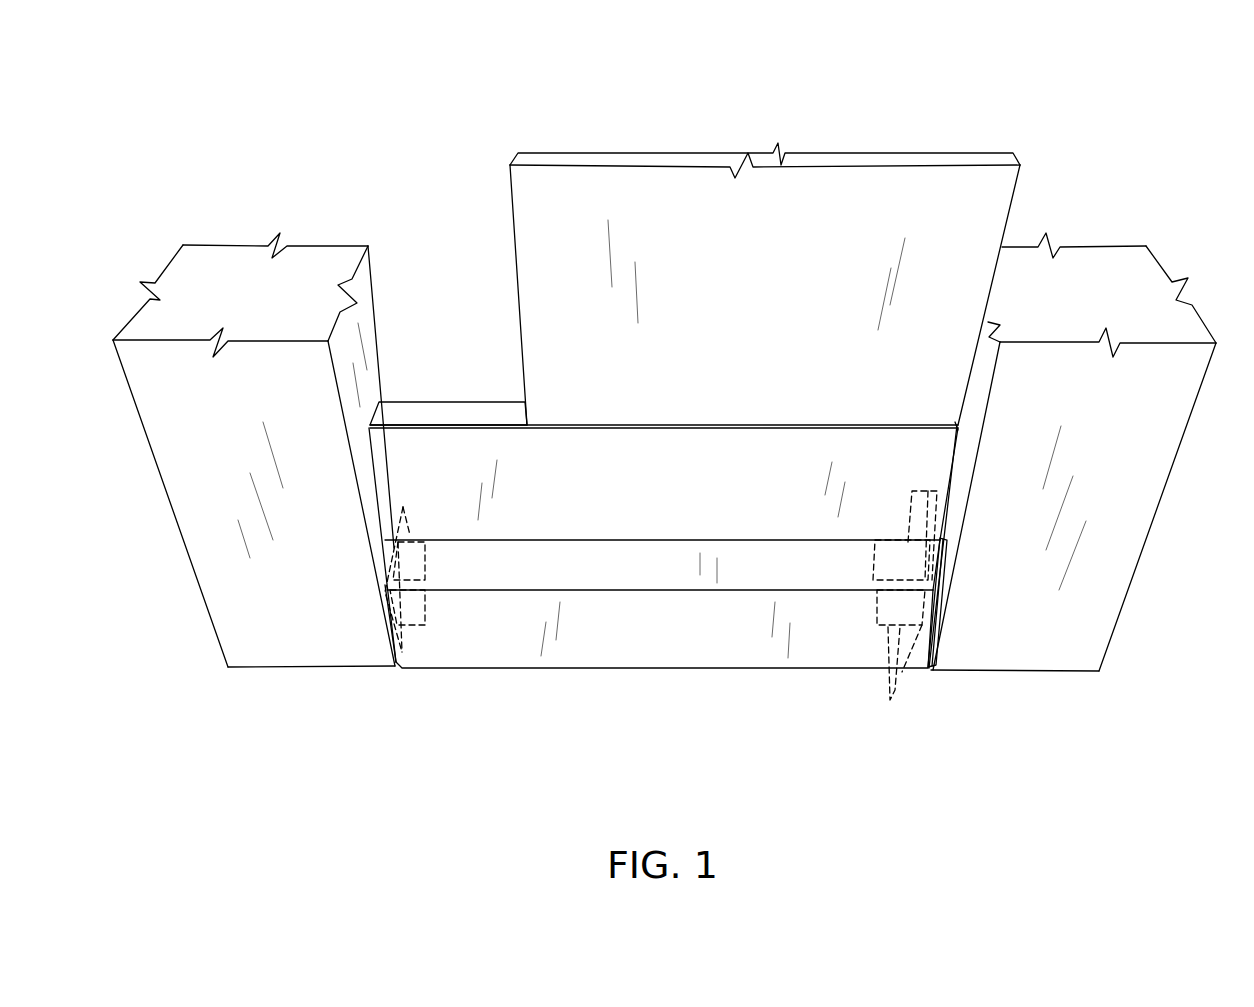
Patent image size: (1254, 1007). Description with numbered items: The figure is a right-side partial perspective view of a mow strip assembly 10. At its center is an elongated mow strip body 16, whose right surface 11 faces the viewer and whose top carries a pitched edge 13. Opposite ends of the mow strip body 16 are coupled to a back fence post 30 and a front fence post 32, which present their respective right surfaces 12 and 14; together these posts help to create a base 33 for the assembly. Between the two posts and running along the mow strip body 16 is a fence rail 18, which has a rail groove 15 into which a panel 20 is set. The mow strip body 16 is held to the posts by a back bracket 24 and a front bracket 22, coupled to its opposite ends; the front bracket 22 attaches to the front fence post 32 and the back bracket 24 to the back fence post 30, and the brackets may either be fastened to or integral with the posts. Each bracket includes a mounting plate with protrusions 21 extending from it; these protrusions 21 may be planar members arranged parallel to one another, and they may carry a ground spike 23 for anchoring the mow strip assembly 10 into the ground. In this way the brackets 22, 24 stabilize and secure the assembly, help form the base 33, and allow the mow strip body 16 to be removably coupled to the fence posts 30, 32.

The mow strip assembly 10 is at (671, 391).
The right surface 11 is at (665, 646).
The right surface 12 is at (218, 448).
The pitched edge 13 is at (668, 580).
The right surface 14 is at (1124, 452).
The rail groove 15 is at (450, 417).
The mow strip body 16 is at (548, 704).
The fence rail 18 is at (676, 496).
The panel 20 is at (740, 296).
The protrusions 21 is at (888, 618).
The front bracket 22 is at (945, 560).
The ground spike 23 is at (897, 687).
The back bracket 24 is at (390, 578).
The back fence post 30 is at (156, 573).
The front fence post 32 is at (1087, 452).
The base 33 is at (1087, 452).